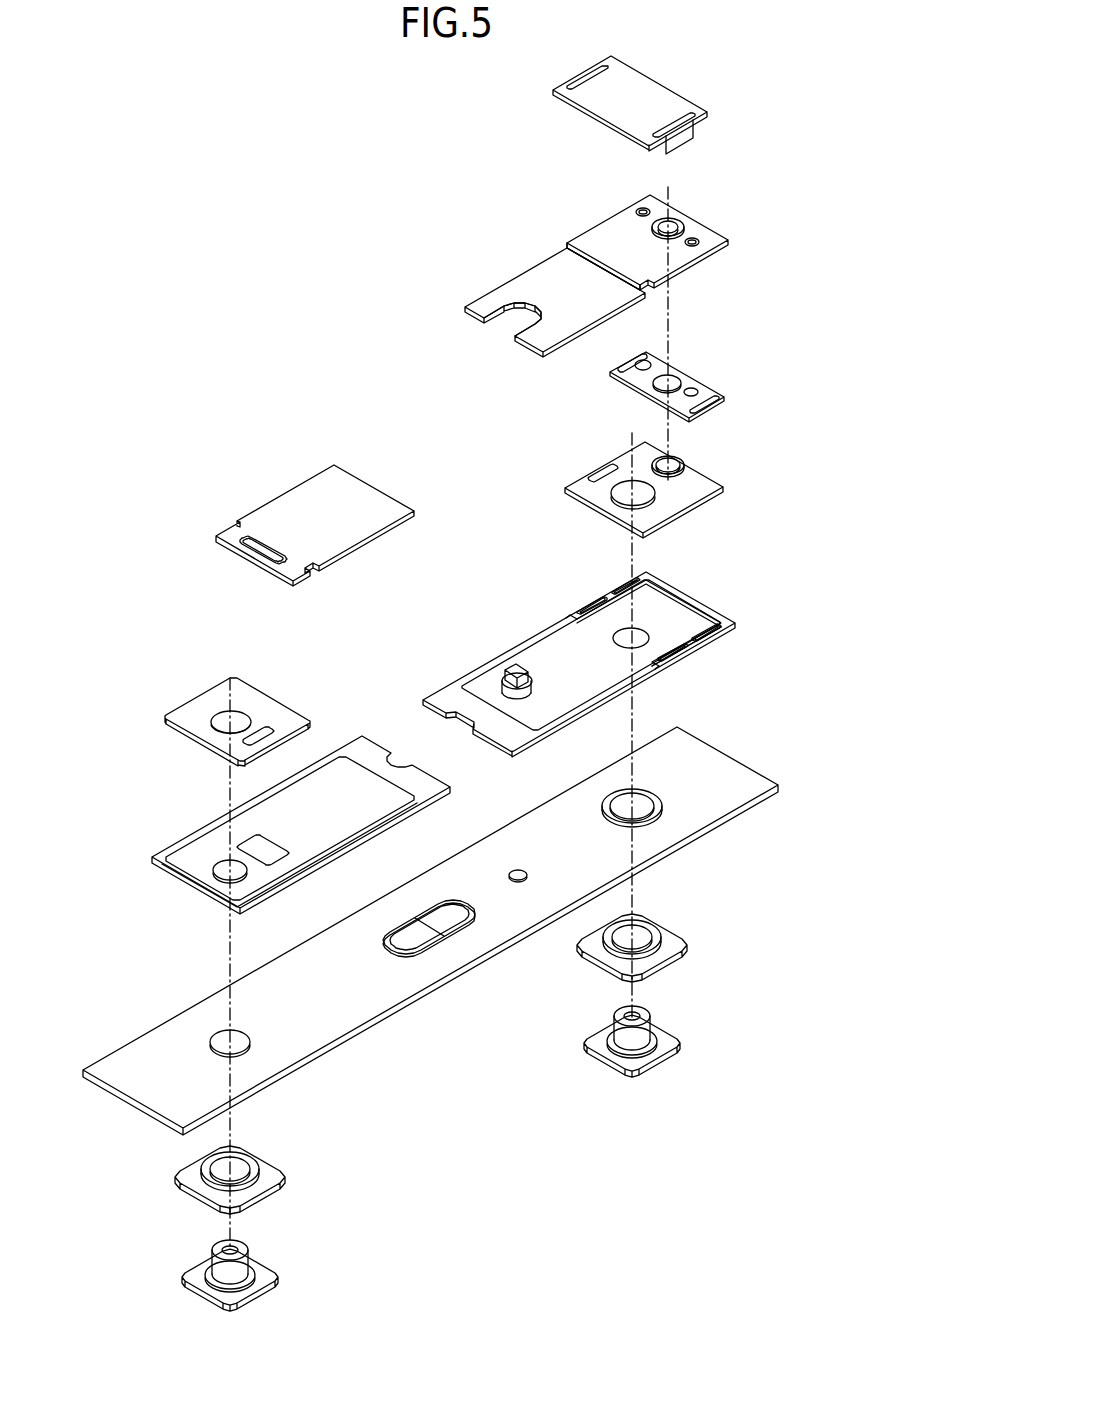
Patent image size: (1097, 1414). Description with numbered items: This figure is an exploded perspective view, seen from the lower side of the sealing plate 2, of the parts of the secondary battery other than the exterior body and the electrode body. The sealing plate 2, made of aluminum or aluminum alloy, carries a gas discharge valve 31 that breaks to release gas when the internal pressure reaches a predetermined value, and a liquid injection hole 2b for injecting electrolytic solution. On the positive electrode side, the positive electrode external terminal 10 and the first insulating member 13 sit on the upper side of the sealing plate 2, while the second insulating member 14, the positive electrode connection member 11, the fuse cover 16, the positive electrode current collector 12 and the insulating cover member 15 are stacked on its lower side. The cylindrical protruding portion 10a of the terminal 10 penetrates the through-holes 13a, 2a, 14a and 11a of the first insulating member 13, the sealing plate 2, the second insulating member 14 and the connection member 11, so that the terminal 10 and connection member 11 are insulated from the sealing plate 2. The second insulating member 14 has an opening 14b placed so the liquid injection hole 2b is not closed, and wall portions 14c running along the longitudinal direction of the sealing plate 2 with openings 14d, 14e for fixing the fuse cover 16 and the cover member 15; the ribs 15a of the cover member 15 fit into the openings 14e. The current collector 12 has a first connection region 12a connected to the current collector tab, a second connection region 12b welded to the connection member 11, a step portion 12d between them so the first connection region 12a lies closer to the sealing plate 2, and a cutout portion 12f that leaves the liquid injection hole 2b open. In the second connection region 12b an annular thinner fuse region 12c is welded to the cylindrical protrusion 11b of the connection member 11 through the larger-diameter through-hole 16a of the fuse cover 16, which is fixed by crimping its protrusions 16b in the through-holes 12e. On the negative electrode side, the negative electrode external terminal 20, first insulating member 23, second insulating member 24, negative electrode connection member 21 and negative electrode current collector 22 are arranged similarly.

The sealing plate 2 is at (435, 919).
The through-hole 2a is at (622, 800).
The liquid injection hole 2b is at (517, 868).
The positive electrode external terminal 10 is at (671, 1021).
The protruding portion 10a is at (640, 1015).
The positive electrode connection member 11 is at (661, 477).
The through-hole 11a is at (622, 493).
The cylindrical protrusion 11b is at (672, 462).
The positive electrode current collector 12 is at (632, 252).
The first connection region 12a is at (538, 277).
The second connection region 12b is at (622, 228).
The fuse region 12c is at (672, 225).
The step portion 12d is at (565, 246).
The through-holes 12e is at (706, 251).
The cutout portion 12f is at (517, 322).
The first insulating member 13 is at (670, 929).
The through-hole 13a is at (638, 935).
The second insulating member 14 is at (621, 649).
The through-hole 14a is at (642, 634).
The opening 14b is at (512, 688).
The wall portions 14c is at (654, 672).
The opening 14d is at (728, 632).
The opening 14e is at (690, 650).
The insulating cover member 15 is at (671, 106).
The ribs 15a is at (692, 142).
The fuse cover 16 is at (692, 385).
The through-hole 16a is at (672, 375).
The protrusions 16b is at (698, 391).
The negative electrode external terminal 20 is at (192, 1262).
The negative electrode connection member 21 is at (208, 690).
The negative electrode current collector 22 is at (290, 489).
The first insulating member 23 is at (195, 1170).
The second insulating member 24 is at (182, 837).
The gas discharge valve 31 is at (412, 921).